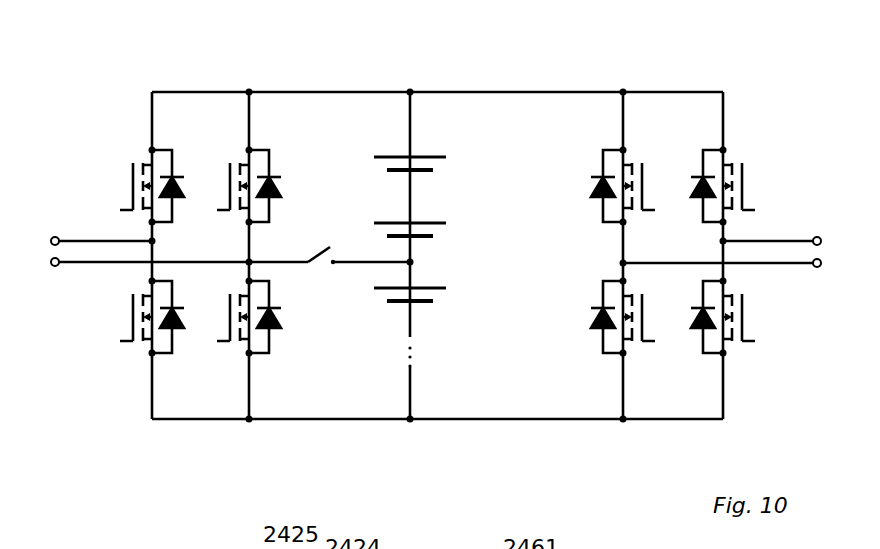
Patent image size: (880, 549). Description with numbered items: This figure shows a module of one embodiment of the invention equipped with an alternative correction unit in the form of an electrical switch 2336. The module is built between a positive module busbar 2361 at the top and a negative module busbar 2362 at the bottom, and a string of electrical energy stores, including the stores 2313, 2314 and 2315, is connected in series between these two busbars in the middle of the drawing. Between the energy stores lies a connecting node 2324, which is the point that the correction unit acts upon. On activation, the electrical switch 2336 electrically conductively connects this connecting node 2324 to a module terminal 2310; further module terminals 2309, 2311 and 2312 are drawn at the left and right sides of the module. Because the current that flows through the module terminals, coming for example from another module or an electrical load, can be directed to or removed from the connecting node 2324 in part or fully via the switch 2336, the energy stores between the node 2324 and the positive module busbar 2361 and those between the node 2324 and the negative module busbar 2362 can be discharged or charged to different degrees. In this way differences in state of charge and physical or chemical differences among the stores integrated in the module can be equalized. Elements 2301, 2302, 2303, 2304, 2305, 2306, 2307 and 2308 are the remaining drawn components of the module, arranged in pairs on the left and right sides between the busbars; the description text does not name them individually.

The switching element (MOSFET) 2301 is at (128, 165).
The switching element (MOSFET) 2302 is at (128, 330).
The switching element (MOSFET) 2303 is at (222, 162).
The switching element (MOSFET) 2304 is at (223, 318).
The switching element (MOSFET) 2305 is at (652, 165).
The switching element (MOSFET) 2306 is at (650, 320).
The switching element (MOSFET) 2307 is at (748, 167).
The switching element (MOSFET) 2308 is at (748, 330).
The input terminal 2309 is at (67, 235).
The module terminal 2310 is at (72, 264).
The output terminal 2311 is at (808, 235).
The output terminal 2312 is at (800, 265).
The battery cell 2313 is at (453, 163).
The electrical energy store 2314 is at (453, 233).
The electrical energy store 2315 is at (453, 297).
The connecting node 2324 is at (392, 270).
The electrical switch 2336 is at (328, 245).
The positive module busbar 2361 is at (475, 88).
The negative module busbar 2362 is at (492, 422).